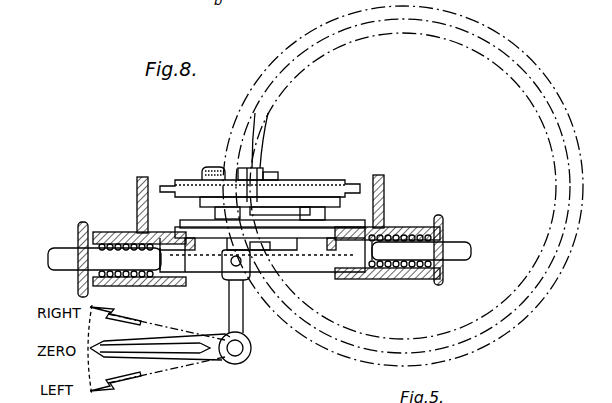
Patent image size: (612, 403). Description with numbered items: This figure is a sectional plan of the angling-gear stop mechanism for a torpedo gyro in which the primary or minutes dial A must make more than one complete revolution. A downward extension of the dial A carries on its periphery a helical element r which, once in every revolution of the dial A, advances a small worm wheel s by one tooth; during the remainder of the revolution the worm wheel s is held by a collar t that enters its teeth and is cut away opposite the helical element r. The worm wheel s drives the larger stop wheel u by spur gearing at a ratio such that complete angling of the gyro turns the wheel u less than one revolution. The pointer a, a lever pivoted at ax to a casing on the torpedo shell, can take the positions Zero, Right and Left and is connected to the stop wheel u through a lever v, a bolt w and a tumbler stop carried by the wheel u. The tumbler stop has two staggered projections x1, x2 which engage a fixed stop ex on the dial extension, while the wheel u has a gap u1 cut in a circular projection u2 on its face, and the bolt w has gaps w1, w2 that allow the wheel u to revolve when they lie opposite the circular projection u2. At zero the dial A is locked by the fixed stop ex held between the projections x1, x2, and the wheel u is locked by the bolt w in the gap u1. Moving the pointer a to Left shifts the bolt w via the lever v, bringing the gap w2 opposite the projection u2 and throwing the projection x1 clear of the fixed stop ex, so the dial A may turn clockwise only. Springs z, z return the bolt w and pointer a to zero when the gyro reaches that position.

The collar t is at (334, 366).
The primary or minutes dial A is at (403, 186).
The spring z is at (113, 232).
The bolt w is at (72, 258).
The stop wheel u is at (318, 190).
The projection of tumbler stop x2 is at (238, 214).
The helical element r is at (243, 170).
The fixed stop ex is at (264, 184).
The projection of tumbler stop x1 is at (276, 176).
The worm wheel s is at (211, 192).
The gap in bolt w2 is at (215, 265).
The gap in bolt w1 is at (180, 248).
The gap in circular projection u1 is at (200, 248).
The circular projection u2 is at (338, 240).
The lever v is at (245, 320).
The pivot ax is at (237, 352).
The pointer a is at (190, 352).